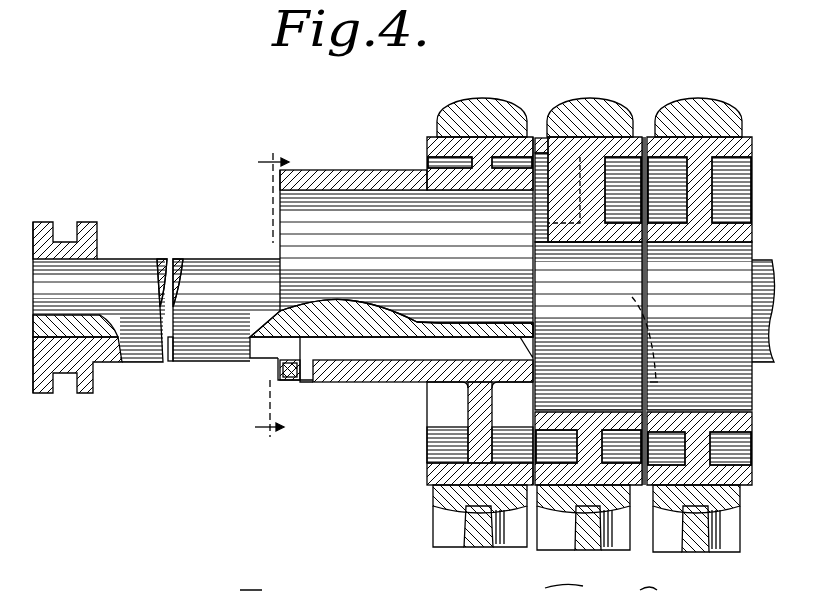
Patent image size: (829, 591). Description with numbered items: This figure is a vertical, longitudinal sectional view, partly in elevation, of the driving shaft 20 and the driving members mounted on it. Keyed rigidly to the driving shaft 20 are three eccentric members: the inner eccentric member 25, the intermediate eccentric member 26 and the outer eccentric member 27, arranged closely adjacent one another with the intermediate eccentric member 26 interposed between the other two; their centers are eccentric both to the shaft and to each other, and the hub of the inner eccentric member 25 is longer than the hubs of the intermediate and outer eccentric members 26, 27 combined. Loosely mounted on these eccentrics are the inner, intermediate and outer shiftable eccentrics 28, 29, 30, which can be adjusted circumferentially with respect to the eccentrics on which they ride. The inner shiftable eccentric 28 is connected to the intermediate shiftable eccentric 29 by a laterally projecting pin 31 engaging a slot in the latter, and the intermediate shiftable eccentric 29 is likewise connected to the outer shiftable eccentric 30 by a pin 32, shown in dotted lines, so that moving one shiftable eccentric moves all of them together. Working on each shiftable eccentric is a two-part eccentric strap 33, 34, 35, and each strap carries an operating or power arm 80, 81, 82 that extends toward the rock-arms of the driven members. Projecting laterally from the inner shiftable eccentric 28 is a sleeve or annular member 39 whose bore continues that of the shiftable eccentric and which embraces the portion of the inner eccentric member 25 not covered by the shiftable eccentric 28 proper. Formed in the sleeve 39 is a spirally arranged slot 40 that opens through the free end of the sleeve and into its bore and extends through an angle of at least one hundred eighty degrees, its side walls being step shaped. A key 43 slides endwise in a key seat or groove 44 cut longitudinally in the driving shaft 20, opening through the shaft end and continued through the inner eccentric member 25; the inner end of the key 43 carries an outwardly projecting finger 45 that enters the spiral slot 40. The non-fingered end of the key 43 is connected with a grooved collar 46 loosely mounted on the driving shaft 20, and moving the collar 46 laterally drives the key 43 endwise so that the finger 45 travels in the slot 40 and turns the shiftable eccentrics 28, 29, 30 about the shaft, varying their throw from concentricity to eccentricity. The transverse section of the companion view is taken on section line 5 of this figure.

The section line 5— 5 is at (269, 297).
The driving shaft 20 is at (203, 270).
The inner eccentric member 25 is at (369, 360).
The intermediate eccentric member 26 is at (596, 311).
The outer eccentric member 27 is at (710, 311).
The inner shiftable eccentric 28 is at (474, 178).
The intermediate shiftable eccentric 29 is at (580, 244).
The outer shiftable eccentric 30 is at (697, 220).
The laterally projecting pin 31 is at (537, 138).
The pin 32 is at (630, 329).
The eccentric strap 33 is at (456, 108).
The eccentric strap 34 is at (575, 103).
The eccentric strap 35 is at (700, 102).
The sleeve or annular member 39 is at (330, 163).
The spirally arranged slot 40 is at (308, 372).
The key 43 is at (254, 352).
The key seat or groove 44 is at (386, 350).
The finger 45 is at (277, 368).
The grooved collar 46 is at (99, 245).
The operating or power arm 80 is at (479, 532).
The operating or power arm 81 is at (587, 537).
The operating or power arm 82 is at (695, 543).